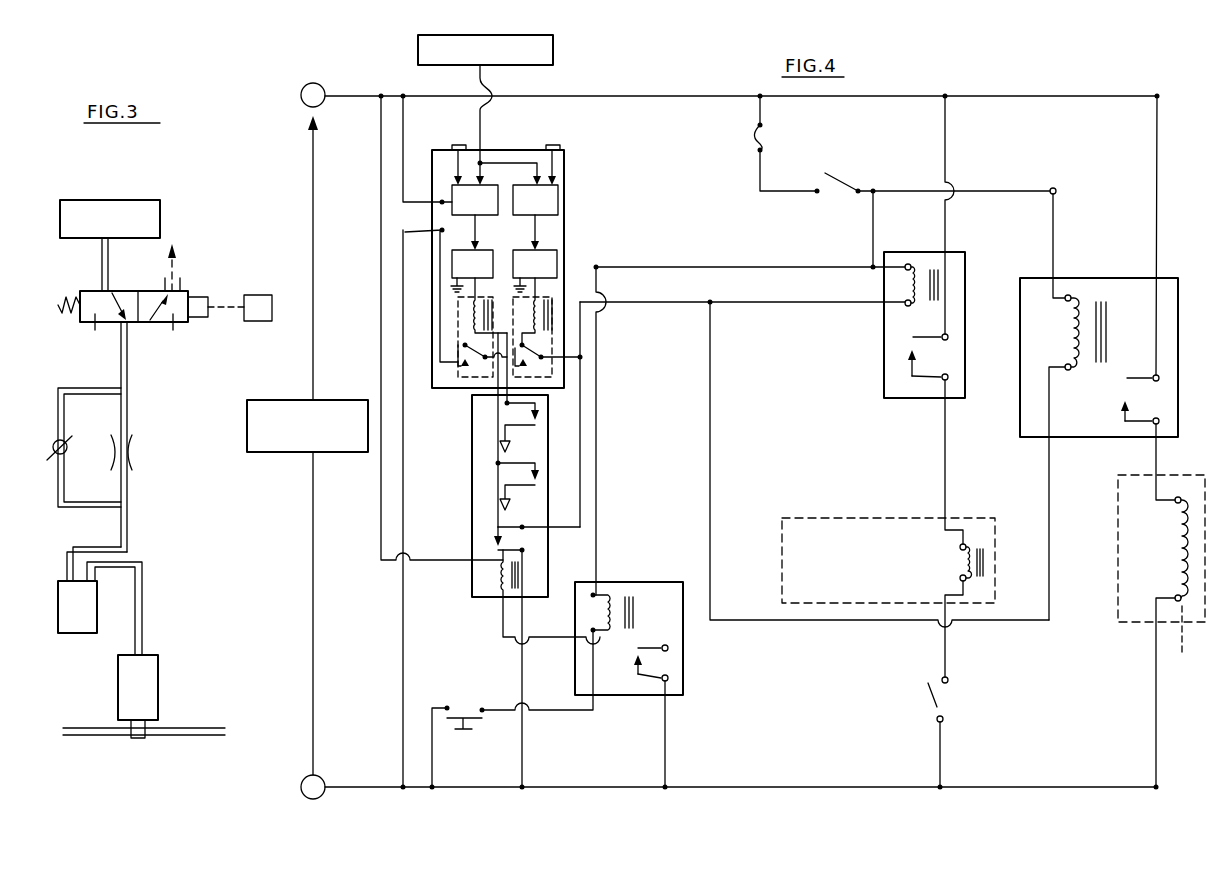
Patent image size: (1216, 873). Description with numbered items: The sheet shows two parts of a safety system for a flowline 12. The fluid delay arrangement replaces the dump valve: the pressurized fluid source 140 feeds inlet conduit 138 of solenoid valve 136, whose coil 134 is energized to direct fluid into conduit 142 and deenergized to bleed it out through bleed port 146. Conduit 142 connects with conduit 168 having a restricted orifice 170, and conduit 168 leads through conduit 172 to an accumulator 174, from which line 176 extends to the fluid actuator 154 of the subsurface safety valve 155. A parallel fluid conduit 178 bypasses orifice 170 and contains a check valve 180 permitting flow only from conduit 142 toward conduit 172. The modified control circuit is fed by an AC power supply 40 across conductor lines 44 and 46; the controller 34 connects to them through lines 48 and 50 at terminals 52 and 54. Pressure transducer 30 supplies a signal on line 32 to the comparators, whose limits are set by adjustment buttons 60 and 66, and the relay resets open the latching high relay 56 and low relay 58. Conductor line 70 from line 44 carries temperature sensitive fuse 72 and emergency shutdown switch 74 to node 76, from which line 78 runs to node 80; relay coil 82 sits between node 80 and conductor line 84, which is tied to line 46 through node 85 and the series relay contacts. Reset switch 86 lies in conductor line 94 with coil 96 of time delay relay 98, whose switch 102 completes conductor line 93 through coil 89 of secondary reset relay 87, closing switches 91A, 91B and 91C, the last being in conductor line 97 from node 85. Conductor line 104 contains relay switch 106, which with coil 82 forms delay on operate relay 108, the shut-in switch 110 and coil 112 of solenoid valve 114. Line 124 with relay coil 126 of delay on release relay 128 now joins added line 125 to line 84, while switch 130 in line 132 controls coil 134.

In FIG. 3, the flowline 12 is at (178, 727).
In FIG. 4, the pressure transducer 30 is at (543, 50).
In FIG. 4, the signal line 32 is at (481, 128).
In FIG. 4, the controller 34 is at (491, 248).
In FIG. 4, the AC power supply 40 is at (276, 452).
In FIG. 4, the electrical conductor line 44 is at (362, 96).
In FIG. 4, the electrical conductor line 46 is at (361, 787).
In FIG. 4, the line 48 is at (402, 149).
In FIG. 4, the line 50 is at (401, 643).
In FIG. 4, the terminal 52 is at (442, 203).
In FIG. 4, the terminal 54 is at (405, 232).
In FIG. 4, the high relay 56 is at (458, 341).
In FIG. 4, the low relay 58 is at (552, 336).
In FIG. 4, the adjustment button 60 is at (460, 145).
In FIG. 4, the adjustment button 66 is at (552, 145).
In FIG. 4, the conductor line 70 is at (778, 193).
In FIG. 4, the temperature sensitive fuse 72 is at (763, 134).
In FIG. 4, the emergency shutdown switch 74 is at (843, 171).
In FIG. 4, the node 76 is at (873, 186).
In FIG. 4, the line 78 is at (873, 233).
In FIG. 4, the node 80 is at (873, 270).
In FIG. 4, the relay coil 82 is at (905, 293).
In FIG. 4, the conductor line 84 is at (747, 303).
In FIG. 4, the node 85 is at (583, 362).
In FIG. 4, the reset switch 86 is at (473, 721).
In FIG. 4, the secondary reset relay 87 is at (472, 466).
In FIG. 4, the coil 89 is at (500, 581).
In FIG. 4, the switch 91A is at (540, 417).
In FIG. 4, the switch 91B is at (540, 473).
In FIG. 4, the switch 91C is at (494, 538).
In FIG. 4, the conductor line 93 is at (380, 520).
In FIG. 4, the conductor line 94 is at (596, 505).
In FIG. 4, the coil 96 is at (605, 626).
In FIG. 4, the conductor line 97 is at (522, 682).
In FIG. 4, the time delay relay 98 is at (683, 641).
In FIG. 4, the switch 102 is at (668, 676).
In FIG. 4, the conductor line 104 is at (945, 426).
In FIG. 4, the relay switch 106 is at (929, 357).
In FIG. 4, the delay on operate relay 108 is at (802, 319).
In FIG. 4, the shut-in switch 110 is at (934, 706).
In FIG. 4, the coil 112 is at (961, 563).
In FIG. 4, the solenoid valve 114 is at (888, 531).
In FIG. 4, the line 124 is at (975, 189).
In FIG. 4, the line 125 is at (780, 622).
In FIG. 4, the relay coil 126 is at (1074, 324).
In FIG. 4, the delay on release relay 128 is at (1099, 357).
In FIG. 4, the switch 130 is at (1128, 414).
In FIG. 4, the line 132 is at (1152, 464).
In FIG. 3, the coil 134 is at (258, 321).
In FIG. 4, the coil 134 is at (1175, 561).
In FIG. 3, the solenoid valve 136 is at (158, 327).
In FIG. 4, the solenoid valve 136 is at (1179, 645).
In FIG. 3, the inlet conduit 138 is at (103, 282).
In FIG. 3, the pressurized fluid source 140 is at (146, 200).
In FIG. 3, the conduit 142 is at (128, 379).
In FIG. 3, the bleed port 146 is at (183, 279).
In FIG. 3, the fluid actuator 154 is at (152, 681).
In FIG. 3, the subsurface safety valve 155 is at (138, 740).
In FIG. 3, the conduit 168 is at (121, 489).
In FIG. 3, the restricted orifice 170 is at (134, 452).
In FIG. 3, the conduit 172 is at (127, 525).
In FIG. 3, the accumulator 174 is at (78, 622).
In FIG. 3, the line 176 is at (142, 604).
In FIG. 3, the fluid conduit 178 is at (100, 502).
In FIG. 3, the check valve 180 is at (64, 453).